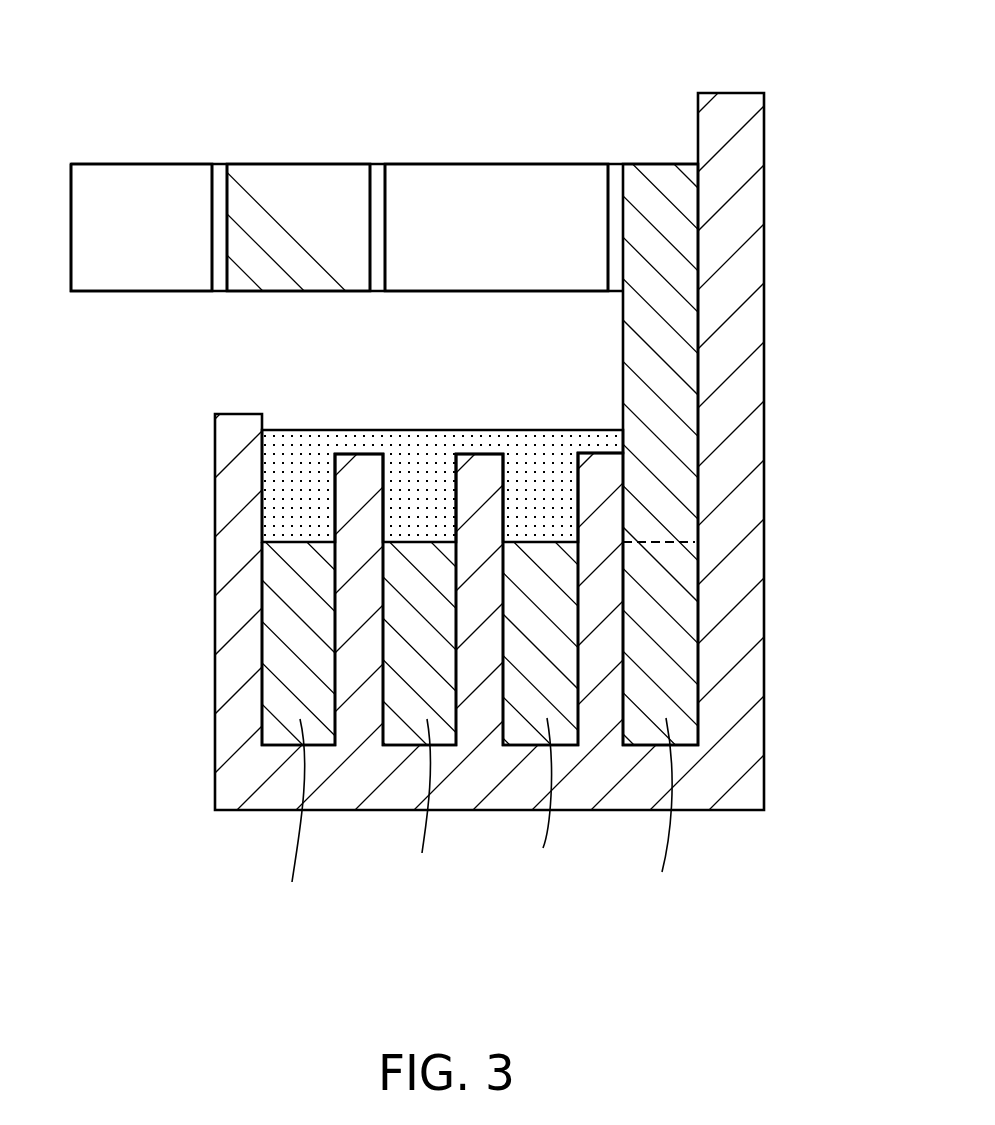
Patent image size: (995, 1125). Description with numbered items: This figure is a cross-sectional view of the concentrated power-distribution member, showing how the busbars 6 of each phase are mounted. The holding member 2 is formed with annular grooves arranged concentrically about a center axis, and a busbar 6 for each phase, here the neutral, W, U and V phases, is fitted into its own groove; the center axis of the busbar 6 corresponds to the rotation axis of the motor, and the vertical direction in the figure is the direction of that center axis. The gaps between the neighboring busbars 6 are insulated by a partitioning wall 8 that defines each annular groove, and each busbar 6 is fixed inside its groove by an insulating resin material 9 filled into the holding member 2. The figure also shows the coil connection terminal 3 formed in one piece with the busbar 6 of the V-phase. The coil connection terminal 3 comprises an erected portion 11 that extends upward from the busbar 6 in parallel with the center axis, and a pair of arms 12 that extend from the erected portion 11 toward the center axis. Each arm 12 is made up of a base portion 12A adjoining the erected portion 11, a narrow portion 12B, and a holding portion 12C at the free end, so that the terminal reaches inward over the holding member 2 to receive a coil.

The holding member 2 is at (747, 632).
The coil connection terminal 3 is at (433, 100).
The busbar 6 is at (688, 912).
The partitioning wall 8 is at (355, 472).
The insulating resin material 9 is at (283, 495).
The erected portion 11 is at (678, 312).
The pair of arms 12 is at (342, 162).
The base portion 12A is at (500, 178).
The narrow portion 12B is at (297, 193).
The holding portion 12C is at (132, 195).